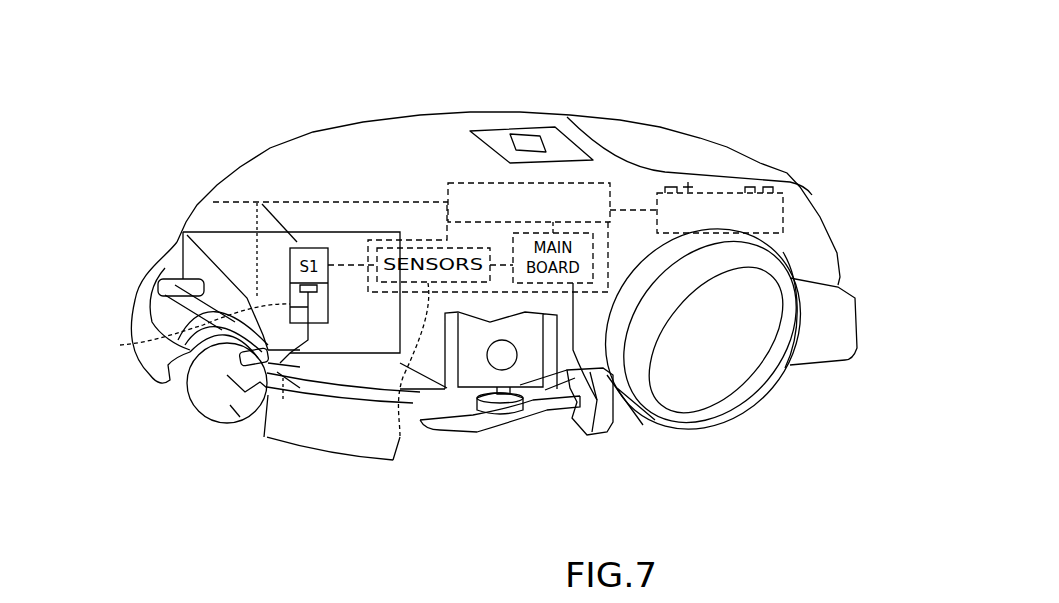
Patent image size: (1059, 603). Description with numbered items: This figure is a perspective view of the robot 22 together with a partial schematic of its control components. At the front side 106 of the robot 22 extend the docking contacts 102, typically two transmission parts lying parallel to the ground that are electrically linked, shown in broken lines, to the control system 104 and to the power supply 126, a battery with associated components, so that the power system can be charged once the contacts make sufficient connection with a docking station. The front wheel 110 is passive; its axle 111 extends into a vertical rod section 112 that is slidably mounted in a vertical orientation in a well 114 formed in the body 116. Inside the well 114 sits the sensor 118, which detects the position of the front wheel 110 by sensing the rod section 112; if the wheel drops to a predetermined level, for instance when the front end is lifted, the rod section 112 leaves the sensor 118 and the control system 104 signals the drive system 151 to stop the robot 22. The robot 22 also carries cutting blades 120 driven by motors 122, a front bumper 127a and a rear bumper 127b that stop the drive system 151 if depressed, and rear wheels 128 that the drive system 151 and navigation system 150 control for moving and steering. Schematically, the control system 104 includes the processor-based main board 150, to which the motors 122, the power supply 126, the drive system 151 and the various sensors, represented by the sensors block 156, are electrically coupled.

The robot 22 is at (316, 98).
The body 116 is at (466, 113).
The drive system 151 is at (463, 177).
The control system 104 is at (618, 188).
The sensor (S1) 118 is at (220, 217).
The front side 106 is at (222, 217).
The well 114 is at (183, 232).
The docking contacts 102 is at (157, 296).
The vertical rod section 112 is at (184, 324).
The axle 111 is at (200, 408).
The front wheel 110 is at (230, 405).
The front bumper 127a is at (337, 430).
The SENSORS 156 is at (400, 437).
The cutting blades 120 is at (453, 428).
The motors (M) 122 is at (542, 413).
The main board 150 is at (640, 432).
The rear wheels 128 is at (743, 365).
The rear bumper 127b is at (843, 325).
The power supply 126 is at (743, 224).